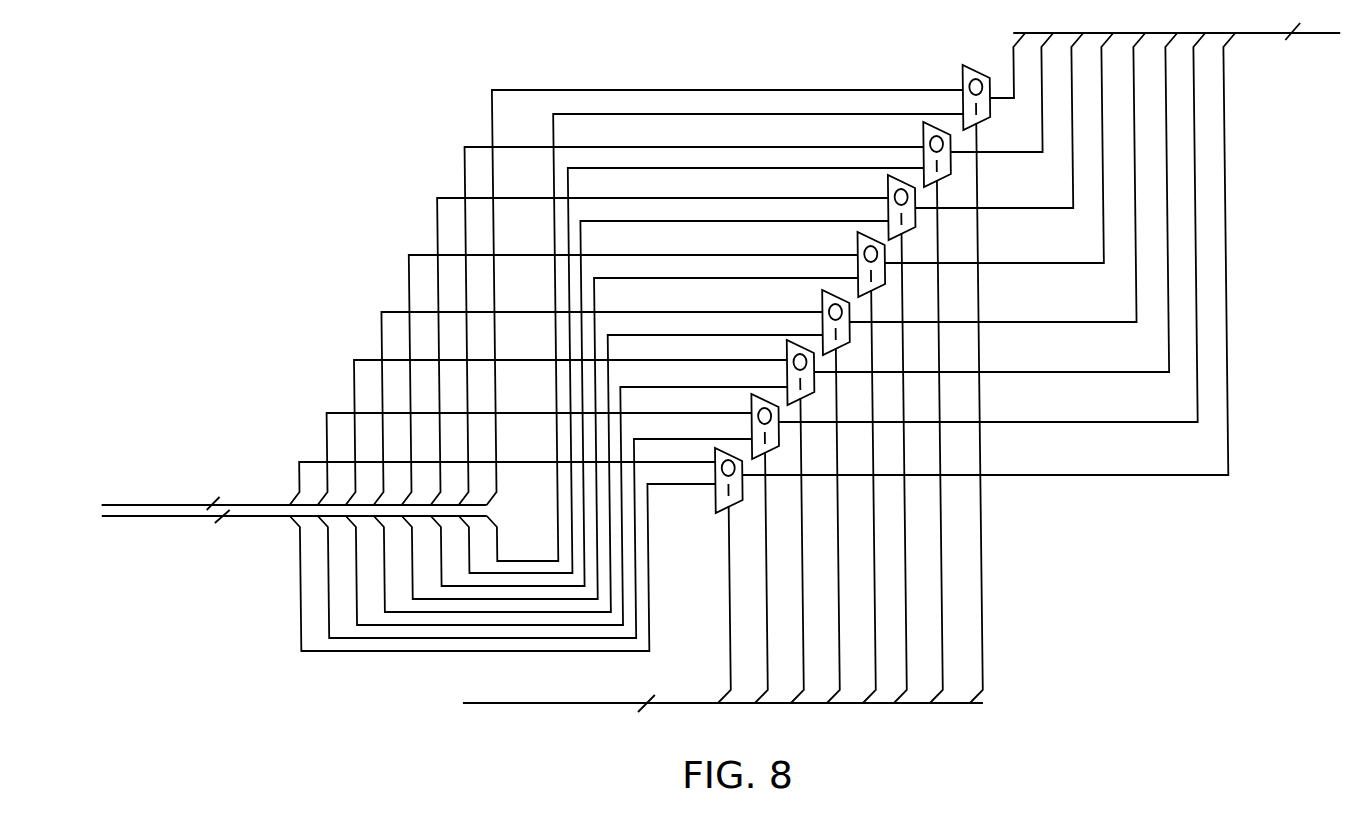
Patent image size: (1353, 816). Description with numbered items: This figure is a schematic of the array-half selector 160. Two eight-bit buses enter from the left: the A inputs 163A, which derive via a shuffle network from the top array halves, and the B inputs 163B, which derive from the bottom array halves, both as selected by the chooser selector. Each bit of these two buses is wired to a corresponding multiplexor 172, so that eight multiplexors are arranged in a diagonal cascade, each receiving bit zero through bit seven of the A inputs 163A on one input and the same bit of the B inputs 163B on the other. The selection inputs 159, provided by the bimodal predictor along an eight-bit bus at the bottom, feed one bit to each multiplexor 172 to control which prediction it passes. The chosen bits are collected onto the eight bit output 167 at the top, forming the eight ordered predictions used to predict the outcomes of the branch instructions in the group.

The array-half selector 160 is at (292, 168).
The A inputs 163A is at (162, 503).
The B inputs 163B is at (160, 520).
The multiplexor 172 is at (963, 72).
The selection inputs 159 is at (537, 703).
The eight bit output 167 is at (1324, 33).